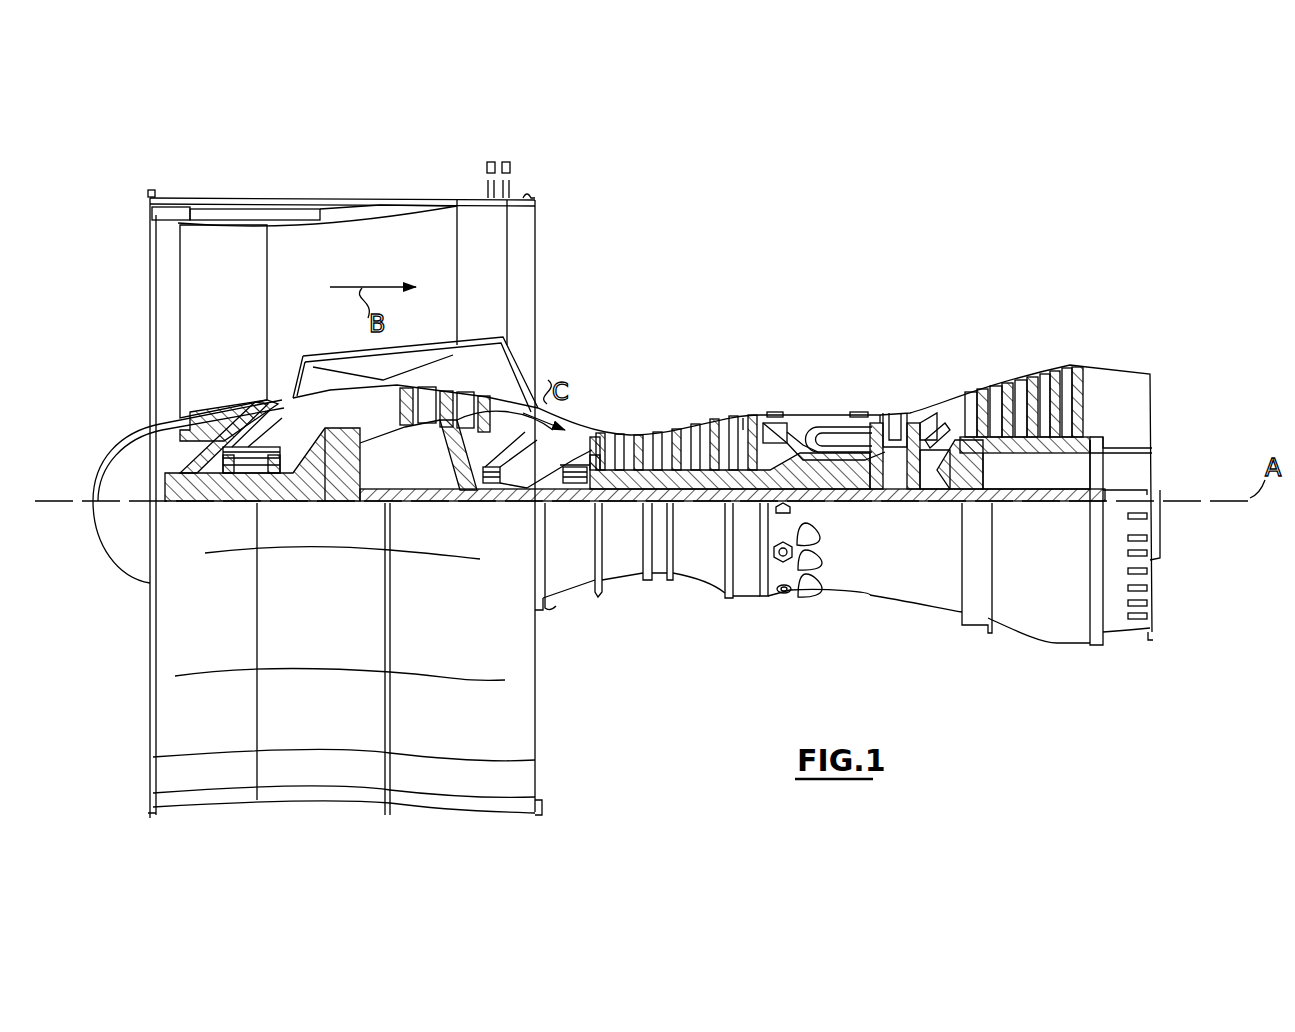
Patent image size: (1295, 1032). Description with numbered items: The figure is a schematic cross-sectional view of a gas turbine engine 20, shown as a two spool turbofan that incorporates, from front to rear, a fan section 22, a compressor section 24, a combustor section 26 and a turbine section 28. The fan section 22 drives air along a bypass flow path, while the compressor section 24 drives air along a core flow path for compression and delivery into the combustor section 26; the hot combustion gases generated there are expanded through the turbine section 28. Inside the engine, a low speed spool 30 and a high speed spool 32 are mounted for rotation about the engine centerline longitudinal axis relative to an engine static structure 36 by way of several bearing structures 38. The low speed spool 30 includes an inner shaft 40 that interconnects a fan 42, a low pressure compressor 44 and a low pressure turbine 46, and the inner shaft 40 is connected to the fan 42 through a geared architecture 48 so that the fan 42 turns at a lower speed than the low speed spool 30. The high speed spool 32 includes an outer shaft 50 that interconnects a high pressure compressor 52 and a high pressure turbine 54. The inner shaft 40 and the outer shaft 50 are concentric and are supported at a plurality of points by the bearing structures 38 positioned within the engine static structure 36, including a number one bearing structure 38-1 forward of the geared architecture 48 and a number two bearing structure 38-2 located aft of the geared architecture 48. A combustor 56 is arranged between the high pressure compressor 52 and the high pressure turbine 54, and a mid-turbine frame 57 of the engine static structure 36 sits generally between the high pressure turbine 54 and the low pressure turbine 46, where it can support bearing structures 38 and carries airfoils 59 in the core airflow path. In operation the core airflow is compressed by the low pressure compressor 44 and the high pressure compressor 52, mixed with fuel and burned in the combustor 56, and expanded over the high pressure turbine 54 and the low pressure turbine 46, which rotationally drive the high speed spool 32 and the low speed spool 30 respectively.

The gas turbine engine 20 is at (848, 244).
The fan section 22 is at (268, 194).
The compressor section 24 is at (466, 382).
The combustor section 26 is at (825, 389).
The turbine section 28 is at (1025, 387).
The low speed spool 30 is at (412, 507).
The high speed spool 32 is at (750, 450).
The engine static structure 36 is at (746, 600).
The bearing structures 38 is at (942, 482).
The #1 bearing structure 38-1 is at (255, 478).
The #2 bearing structure 38-2 is at (486, 483).
The inner shaft 40 is at (553, 503).
The fan 42 is at (236, 338).
The low pressure compressor 44 is at (467, 397).
The low pressure turbine 46 is at (1032, 382).
The geared architecture 48 is at (350, 478).
The outer shaft 50 is at (832, 484).
The high pressure compressor 52 is at (668, 433).
The high pressure turbine 54 is at (896, 417).
The combustor 56 is at (827, 438).
The mid-turbine frame 57 is at (953, 448).
The airfoils 59 is at (937, 437).